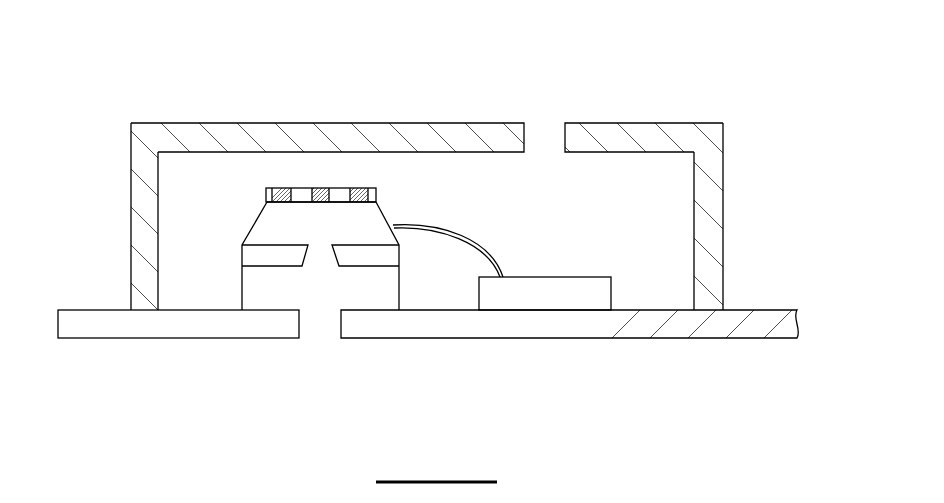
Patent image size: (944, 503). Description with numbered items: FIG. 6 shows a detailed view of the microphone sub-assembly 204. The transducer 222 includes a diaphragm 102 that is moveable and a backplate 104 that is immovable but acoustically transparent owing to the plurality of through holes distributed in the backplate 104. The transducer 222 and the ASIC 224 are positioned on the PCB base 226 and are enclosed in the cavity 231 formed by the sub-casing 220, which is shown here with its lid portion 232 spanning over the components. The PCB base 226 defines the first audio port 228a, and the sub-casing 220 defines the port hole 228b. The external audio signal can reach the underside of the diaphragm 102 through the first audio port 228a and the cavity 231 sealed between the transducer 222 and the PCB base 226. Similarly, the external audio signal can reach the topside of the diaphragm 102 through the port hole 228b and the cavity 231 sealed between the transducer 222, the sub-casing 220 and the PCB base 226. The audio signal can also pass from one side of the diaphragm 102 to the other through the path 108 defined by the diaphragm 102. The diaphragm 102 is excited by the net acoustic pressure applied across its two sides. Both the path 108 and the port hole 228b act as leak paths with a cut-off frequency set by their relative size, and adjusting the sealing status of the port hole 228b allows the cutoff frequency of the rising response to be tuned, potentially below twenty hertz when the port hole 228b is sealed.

The diaphragm 102 is at (268, 255).
The backplate 104 is at (322, 187).
The path 108 is at (318, 257).
The microphone sub-assembly 204 is at (393, 68).
The sub-casing 220 is at (723, 178).
The transducer 222 is at (242, 278).
The ASIC 224 is at (611, 292).
The PCB base 226 is at (616, 322).
The first audio port 228a is at (317, 323).
The port hole 228b is at (547, 128).
The cavity 231 is at (510, 220).
The lid 232 is at (318, 123).